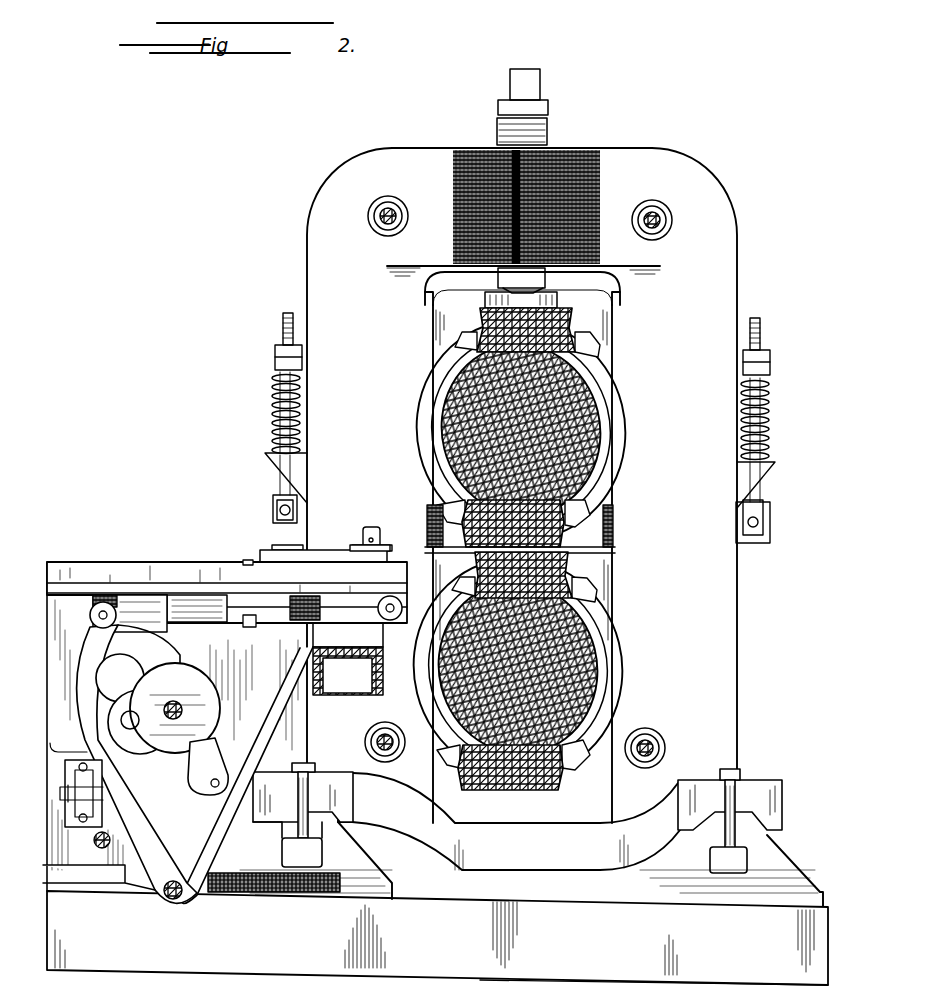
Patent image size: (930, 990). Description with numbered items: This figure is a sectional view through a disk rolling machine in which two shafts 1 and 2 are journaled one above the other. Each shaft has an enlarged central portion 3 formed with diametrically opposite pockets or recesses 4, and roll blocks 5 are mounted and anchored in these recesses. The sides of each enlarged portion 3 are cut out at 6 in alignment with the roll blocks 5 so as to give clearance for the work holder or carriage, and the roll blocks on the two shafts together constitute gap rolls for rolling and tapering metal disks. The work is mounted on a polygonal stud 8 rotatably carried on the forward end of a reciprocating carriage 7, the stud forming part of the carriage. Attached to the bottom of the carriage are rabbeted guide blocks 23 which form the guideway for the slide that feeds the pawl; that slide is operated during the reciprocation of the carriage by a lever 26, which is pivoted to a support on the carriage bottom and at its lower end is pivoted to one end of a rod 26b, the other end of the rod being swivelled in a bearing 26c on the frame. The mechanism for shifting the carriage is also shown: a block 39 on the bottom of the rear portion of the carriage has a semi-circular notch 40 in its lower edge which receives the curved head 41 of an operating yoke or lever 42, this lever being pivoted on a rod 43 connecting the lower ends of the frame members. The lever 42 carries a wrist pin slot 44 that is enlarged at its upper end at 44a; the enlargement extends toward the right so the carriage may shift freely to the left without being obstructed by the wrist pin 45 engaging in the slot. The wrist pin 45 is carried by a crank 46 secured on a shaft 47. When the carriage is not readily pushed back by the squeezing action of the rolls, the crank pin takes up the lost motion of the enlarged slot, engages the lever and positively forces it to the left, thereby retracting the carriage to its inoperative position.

The shaft 1 is at (567, 428).
The shaft 2 is at (560, 670).
The enlarged central portion 3 is at (592, 470).
The pocket or recess 4 is at (470, 368).
The roll block 5 is at (570, 338).
The cut-out 6 is at (445, 417).
The reciprocating carriage 7 is at (178, 575).
The polygonal stud 8 is at (366, 530).
The rabbeted guide block 23 is at (200, 612).
The lever 26 is at (208, 762).
The rod 26b is at (200, 790).
The bearing 26c is at (90, 840).
The block 39 is at (118, 595).
The semi-circular notch 40 is at (100, 595).
The curved head 41 is at (96, 622).
The operating yoke or lever 42 is at (95, 708).
The rod 43 is at (180, 896).
The wrist pin slot 44 is at (138, 755).
The enlarged portion 44a is at (140, 698).
The wrist pin 45 is at (138, 712).
The crank 46 is at (200, 718).
The shaft 47 is at (182, 707).